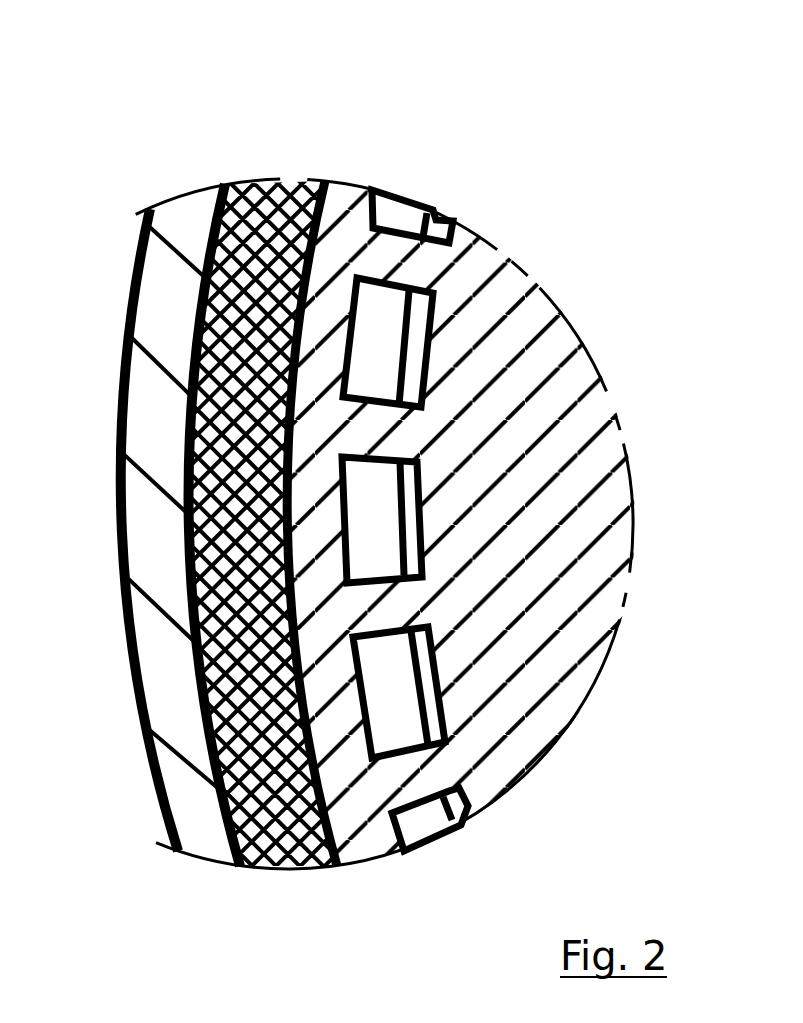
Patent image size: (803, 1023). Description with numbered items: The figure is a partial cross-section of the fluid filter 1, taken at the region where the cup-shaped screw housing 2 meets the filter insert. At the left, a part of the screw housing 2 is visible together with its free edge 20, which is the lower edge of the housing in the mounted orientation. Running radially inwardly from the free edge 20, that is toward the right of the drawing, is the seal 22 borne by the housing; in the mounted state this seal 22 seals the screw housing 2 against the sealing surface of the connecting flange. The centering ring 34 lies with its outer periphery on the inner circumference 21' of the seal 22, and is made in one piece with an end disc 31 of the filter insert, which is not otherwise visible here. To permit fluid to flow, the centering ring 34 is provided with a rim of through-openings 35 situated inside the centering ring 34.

The fluid filter 1 is at (188, 112).
The screw housing 2 is at (125, 273).
The free edge 20 is at (150, 425).
The inner circumference 21' is at (350, 496).
The seal 22 is at (195, 548).
The end disc 31 is at (603, 493).
The centering ring 34 is at (350, 778).
The through-openings 35 is at (403, 727).